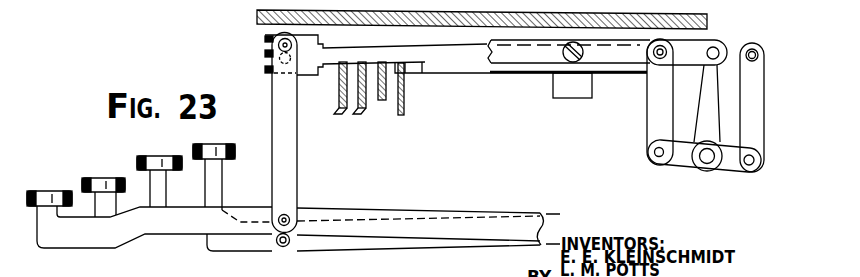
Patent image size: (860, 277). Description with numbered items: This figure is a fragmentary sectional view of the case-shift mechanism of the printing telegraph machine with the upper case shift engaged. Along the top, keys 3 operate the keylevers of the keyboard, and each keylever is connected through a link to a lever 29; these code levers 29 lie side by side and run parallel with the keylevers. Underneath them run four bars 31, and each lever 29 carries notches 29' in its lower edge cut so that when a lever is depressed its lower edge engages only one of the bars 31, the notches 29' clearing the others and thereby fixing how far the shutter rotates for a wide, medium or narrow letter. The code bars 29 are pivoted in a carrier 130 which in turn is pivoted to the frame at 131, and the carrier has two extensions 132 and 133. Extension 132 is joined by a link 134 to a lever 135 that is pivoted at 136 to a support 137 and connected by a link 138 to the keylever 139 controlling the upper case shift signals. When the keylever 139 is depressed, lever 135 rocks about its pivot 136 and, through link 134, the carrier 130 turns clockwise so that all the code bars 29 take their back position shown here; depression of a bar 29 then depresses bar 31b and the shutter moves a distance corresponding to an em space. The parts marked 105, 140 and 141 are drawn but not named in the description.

The key 3 is at (197, 146).
The lever 29 is at (376, 67).
The notch 29' is at (521, 92).
The bar 31 is at (352, 110).
The bar 31b is at (404, 116).
The frame member 105 is at (494, 14).
The carrier 130 is at (706, 101).
The pivot 131 is at (706, 168).
The extension 132 is at (666, 168).
The extension 133 is at (728, 169).
The link 134 is at (660, 127).
The lever 135 is at (633, 64).
The pivot 136 is at (556, 73).
The support 137 is at (575, 94).
The link 138 is at (287, 152).
The keylever 139 is at (418, 197).
The link 140 is at (755, 122).
The link 141 is at (735, 50).